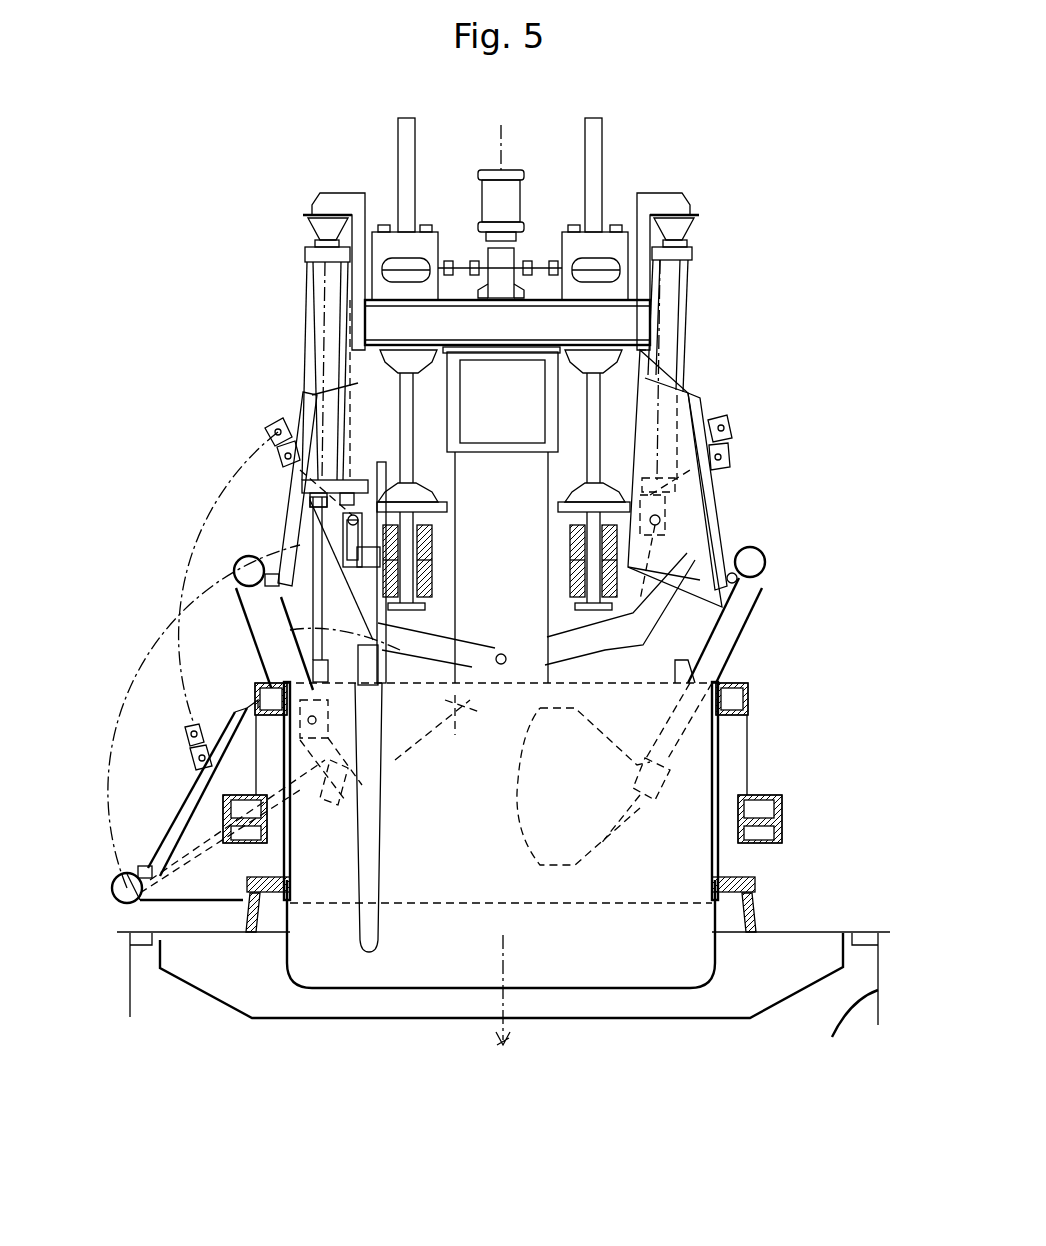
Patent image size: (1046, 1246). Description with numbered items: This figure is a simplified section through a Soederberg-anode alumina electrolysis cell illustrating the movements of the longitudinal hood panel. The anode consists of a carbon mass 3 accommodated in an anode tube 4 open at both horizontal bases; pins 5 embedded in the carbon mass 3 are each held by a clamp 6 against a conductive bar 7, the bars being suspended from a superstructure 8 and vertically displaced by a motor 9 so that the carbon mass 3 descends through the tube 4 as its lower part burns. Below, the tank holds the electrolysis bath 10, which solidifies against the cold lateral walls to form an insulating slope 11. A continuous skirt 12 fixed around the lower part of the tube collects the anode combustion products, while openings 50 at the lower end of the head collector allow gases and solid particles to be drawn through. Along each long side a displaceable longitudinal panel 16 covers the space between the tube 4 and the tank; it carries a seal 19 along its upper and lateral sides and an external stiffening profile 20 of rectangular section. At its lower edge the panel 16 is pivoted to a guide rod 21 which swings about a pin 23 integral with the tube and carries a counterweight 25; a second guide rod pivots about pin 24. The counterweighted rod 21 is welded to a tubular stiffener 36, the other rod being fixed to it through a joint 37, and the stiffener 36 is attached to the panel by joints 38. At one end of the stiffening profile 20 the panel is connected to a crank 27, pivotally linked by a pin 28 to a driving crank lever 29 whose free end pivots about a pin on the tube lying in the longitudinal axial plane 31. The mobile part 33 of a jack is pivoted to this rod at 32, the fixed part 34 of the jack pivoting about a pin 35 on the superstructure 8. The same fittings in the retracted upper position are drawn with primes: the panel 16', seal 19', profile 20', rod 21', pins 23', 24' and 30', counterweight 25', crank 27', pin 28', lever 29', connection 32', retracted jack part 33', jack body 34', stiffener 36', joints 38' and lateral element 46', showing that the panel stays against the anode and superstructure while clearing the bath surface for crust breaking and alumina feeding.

The carbon mass 3 is at (345, 968).
The anode tube 4 is at (718, 775).
The pins 5 is at (378, 812).
The clamp 6 is at (370, 592).
The bar 7 is at (393, 575).
The superstructure 8 is at (778, 252).
The motor 9 is at (518, 192).
The electrolysis bath 10 is at (222, 995).
The insulating slope 11 is at (135, 988).
The skirt 12 is at (248, 930).
The longitudinal panel 16 is at (190, 788).
The longitudinal panel in upper position 16' is at (524, 491).
The seal 19 is at (518, 685).
The seal in upper position 19' is at (704, 516).
The stiffening profile 20 is at (163, 789).
The stiffening profile in upper position 20' is at (769, 482).
The guide rod 21 is at (191, 885).
The guide rod in upper position 21' is at (535, 634).
The pin 23 is at (333, 801).
The pin in upper position 23' is at (656, 772).
The pin 24 is at (169, 763).
The pin in upper position 24' is at (544, 455).
The counterweight 25 is at (454, 734).
The counterweight in upper position 25' is at (585, 786).
The crank 27 is at (159, 746).
The crank in upper position 27' is at (770, 431).
The pin 28 is at (169, 725).
The pin in upper position 28' is at (538, 418).
The driving crank lever 29 is at (322, 794).
The driving crank lever in upper position 29' is at (536, 615).
The pin in upper position 30' is at (522, 626).
The longitudinal axial plane 31 is at (508, 948).
The pivot connection 32 is at (331, 748).
The pivot connection in upper position 32' is at (409, 660).
The mobile part of jack 33 is at (479, 576).
The mobile part of jack retracted 33' is at (369, 496).
The fixed part of jack 34 is at (502, 377).
The fixed part of jack in upper position 34' is at (353, 511).
The pin 35 is at (312, 236).
The tubular stiffener 36 is at (114, 902).
The tubular stiffener in upper position 36' is at (534, 566).
The joint 37 is at (140, 900).
The joints 38 is at (138, 857).
The joints in upper position 38' is at (550, 595).
The lateral element in upper position 46' is at (666, 598).
The openings 50 is at (255, 740).